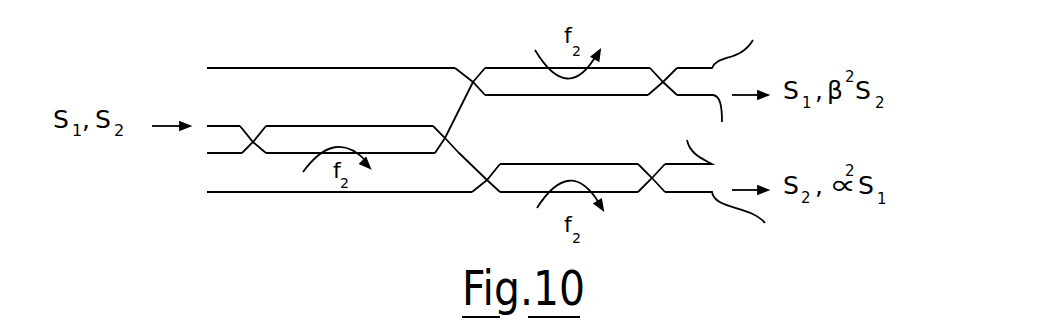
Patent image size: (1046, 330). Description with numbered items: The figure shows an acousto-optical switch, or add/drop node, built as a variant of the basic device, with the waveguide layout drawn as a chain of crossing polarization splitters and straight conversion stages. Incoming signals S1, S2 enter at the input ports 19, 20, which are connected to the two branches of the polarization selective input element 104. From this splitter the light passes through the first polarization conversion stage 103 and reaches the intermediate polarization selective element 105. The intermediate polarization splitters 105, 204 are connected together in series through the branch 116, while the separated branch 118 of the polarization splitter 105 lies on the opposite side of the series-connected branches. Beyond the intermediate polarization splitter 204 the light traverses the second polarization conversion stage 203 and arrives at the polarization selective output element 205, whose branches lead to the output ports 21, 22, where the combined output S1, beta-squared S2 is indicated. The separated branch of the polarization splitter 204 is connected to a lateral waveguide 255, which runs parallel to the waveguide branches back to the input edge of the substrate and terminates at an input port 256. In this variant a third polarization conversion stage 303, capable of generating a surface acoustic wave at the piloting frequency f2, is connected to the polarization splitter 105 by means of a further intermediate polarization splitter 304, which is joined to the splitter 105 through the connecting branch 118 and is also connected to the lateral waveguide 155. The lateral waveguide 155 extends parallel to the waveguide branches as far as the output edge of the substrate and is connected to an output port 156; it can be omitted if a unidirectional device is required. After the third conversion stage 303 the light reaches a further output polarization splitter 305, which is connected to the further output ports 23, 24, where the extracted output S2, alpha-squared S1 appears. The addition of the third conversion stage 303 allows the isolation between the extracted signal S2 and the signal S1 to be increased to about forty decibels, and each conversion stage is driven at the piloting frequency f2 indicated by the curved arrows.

The input port 19 is at (207, 125).
The input port 20 is at (207, 153).
The output port 21 is at (722, 38).
The output port 22 is at (705, 124).
The further output port 23 is at (688, 134).
The further output port 24 is at (725, 224).
The polarization conversion stage 103 is at (358, 116).
The polarization selective input element 104 is at (253, 154).
The intermediate polarization selective element 105 is at (445, 125).
The branch 116 is at (447, 137).
The branch 118 is at (464, 157).
The lateral waveguide 155 is at (333, 193).
The output port 156 is at (207, 193).
The polarization conversion stage 203 is at (593, 102).
The intermediate polarization selective element 204 is at (473, 71).
The polarization selective output element 205 is at (663, 71).
The lateral waveguide 255 is at (321, 67).
The input port 256 is at (207, 67).
The third polarization conversion stage 303 is at (540, 157).
The further intermediate polarization splitter 304 is at (487, 191).
The further output polarization splitter 305 is at (652, 189).